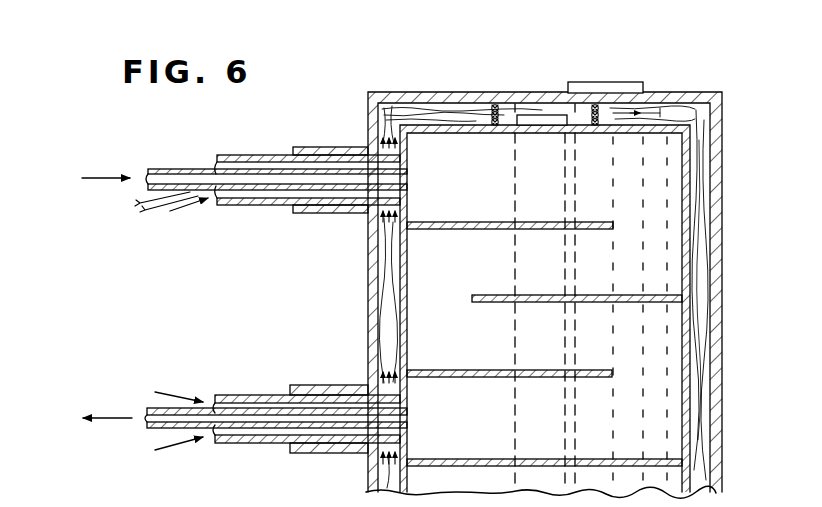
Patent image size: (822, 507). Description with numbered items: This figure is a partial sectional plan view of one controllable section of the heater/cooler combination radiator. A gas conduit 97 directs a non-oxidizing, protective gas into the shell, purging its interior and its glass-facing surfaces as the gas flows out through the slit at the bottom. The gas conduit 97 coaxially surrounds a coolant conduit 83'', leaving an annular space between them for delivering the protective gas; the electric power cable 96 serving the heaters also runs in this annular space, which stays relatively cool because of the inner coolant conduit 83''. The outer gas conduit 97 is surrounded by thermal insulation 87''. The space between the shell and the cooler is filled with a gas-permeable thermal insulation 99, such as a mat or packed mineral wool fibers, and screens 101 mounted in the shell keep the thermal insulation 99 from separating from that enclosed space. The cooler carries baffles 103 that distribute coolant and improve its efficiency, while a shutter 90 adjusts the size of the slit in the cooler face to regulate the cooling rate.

The coolant conduit 83'' is at (254, 163).
The gas conduit 97 is at (263, 155).
The thermal insulation 87'' is at (330, 162).
The electric power cable 96 is at (158, 205).
The thermal insulation 99 is at (428, 110).
The screen 101 is at (505, 108).
The shutter 90 is at (632, 82).
The baffle 103 is at (598, 295).